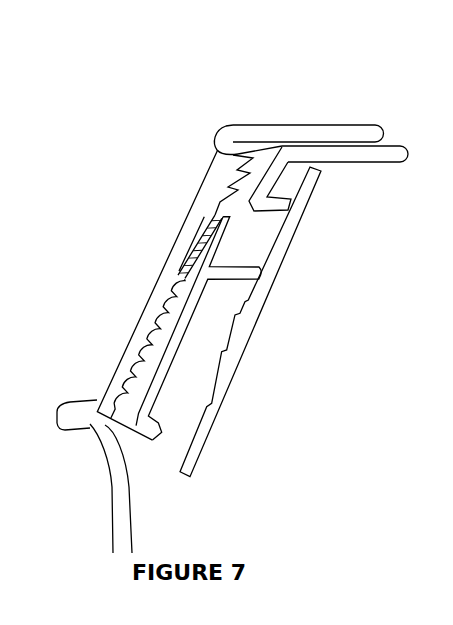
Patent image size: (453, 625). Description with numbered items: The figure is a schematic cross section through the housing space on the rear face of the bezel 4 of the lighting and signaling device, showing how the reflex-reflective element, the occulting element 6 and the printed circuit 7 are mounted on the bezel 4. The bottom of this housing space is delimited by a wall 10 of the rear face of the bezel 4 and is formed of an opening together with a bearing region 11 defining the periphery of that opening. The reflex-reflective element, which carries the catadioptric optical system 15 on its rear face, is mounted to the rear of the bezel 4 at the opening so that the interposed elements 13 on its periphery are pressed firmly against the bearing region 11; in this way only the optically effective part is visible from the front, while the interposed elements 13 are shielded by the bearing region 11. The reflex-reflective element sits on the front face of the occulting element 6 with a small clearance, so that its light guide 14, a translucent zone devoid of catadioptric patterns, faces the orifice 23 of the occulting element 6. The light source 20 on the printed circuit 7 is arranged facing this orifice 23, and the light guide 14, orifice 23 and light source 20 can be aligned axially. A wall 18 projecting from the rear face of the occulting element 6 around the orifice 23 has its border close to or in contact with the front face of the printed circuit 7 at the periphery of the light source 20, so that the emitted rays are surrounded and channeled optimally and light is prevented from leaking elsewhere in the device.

The bezel 4 is at (277, 125).
The occulting element 6 is at (355, 162).
The printed circuit 7 is at (212, 425).
The wall 10 is at (265, 143).
The bearing region 11 is at (90, 430).
The interposed elements 13 is at (239, 153).
The light guide 14 is at (256, 255).
The catadioptric optical system 15 is at (245, 180).
The wall 18 is at (277, 216).
The light source 20 is at (277, 233).
The orifice 23 is at (266, 220).